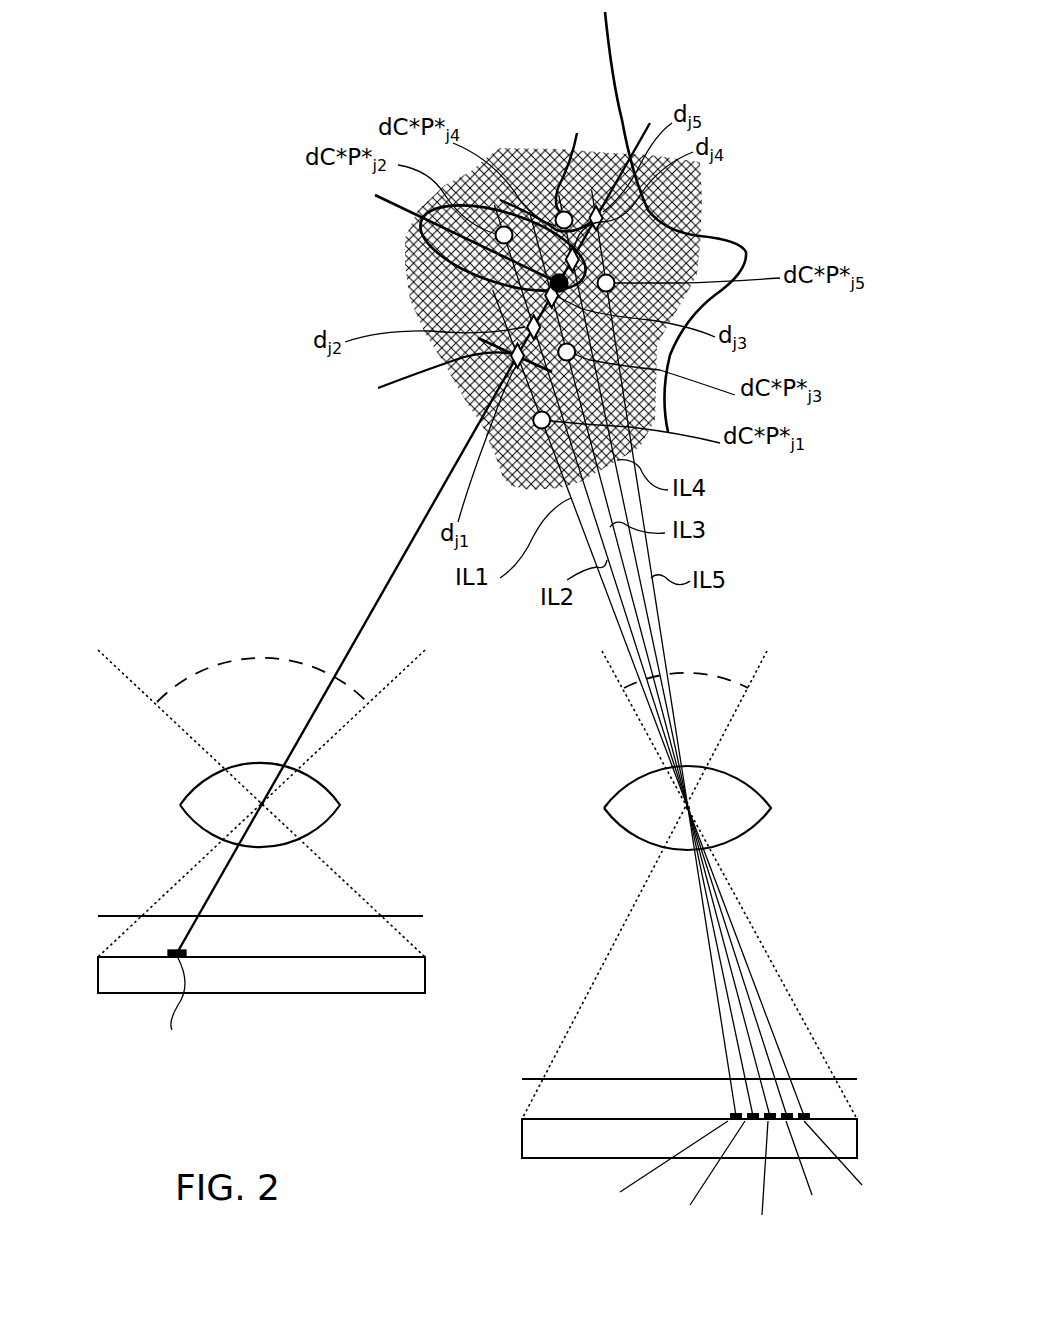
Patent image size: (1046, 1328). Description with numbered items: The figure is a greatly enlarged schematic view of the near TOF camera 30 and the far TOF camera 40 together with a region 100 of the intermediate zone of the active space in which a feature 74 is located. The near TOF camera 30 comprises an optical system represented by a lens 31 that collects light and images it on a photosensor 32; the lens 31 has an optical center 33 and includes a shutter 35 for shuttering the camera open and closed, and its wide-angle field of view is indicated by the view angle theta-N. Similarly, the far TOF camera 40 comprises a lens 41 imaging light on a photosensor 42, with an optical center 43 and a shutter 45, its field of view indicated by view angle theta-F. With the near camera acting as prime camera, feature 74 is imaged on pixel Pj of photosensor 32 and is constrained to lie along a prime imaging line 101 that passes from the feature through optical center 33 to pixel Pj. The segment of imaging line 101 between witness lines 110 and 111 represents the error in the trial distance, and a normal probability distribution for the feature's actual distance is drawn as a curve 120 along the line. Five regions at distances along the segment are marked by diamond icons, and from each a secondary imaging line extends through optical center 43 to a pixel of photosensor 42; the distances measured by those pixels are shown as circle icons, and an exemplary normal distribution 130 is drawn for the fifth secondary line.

The region of intermediate zone 100 is at (246, 226).
The prime imaging line 101 is at (377, 604).
The witness line 110 is at (423, 377).
The witness line 111 is at (548, 169).
The curve 120 is at (428, 242).
The normal distribution 130 is at (737, 240).
The feature 74 is at (549, 283).
The near TOF camera 30 is at (130, 758).
The lens 31 is at (208, 816).
The photosensor 32 is at (380, 993).
The optical center 33 is at (264, 803).
The shutter 35 is at (421, 916).
The far TOF camera 40 is at (798, 783).
The lens 41 is at (756, 814).
The photosensor 42 is at (522, 1135).
The optical center 43 is at (688, 808).
The shutter 45 is at (612, 1079).